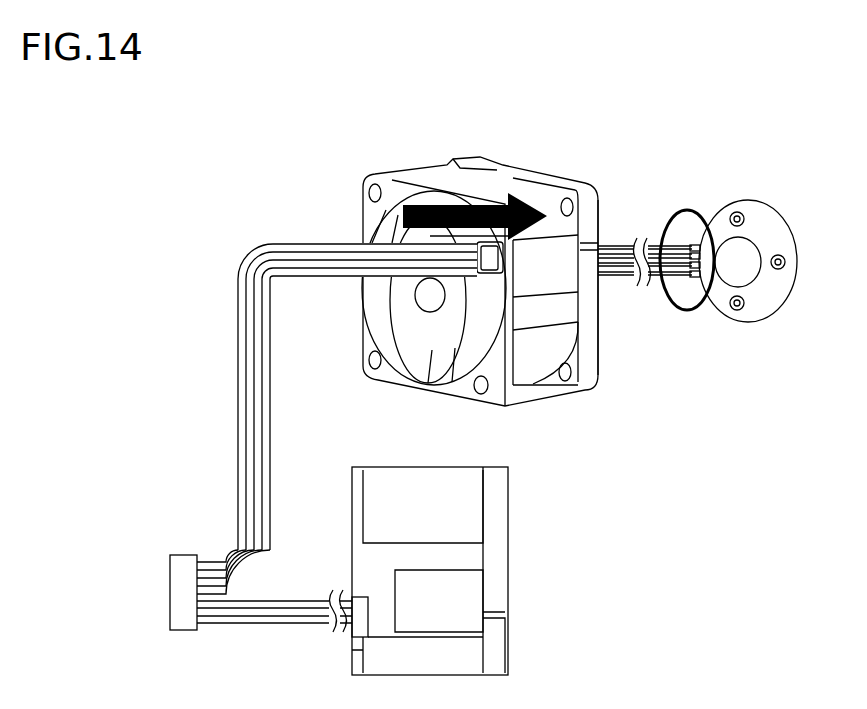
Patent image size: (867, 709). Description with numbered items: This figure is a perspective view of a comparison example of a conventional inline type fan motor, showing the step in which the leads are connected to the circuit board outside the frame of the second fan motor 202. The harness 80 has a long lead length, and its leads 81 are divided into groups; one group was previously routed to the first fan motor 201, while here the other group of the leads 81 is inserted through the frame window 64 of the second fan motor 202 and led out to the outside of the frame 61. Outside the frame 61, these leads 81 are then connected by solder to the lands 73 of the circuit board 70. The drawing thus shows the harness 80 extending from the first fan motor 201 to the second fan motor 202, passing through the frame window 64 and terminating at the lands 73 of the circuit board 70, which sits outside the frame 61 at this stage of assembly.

The frame 61 is at (507, 176).
The second fan motor 202 is at (598, 189).
The frame window 64 is at (468, 276).
The leads 81 is at (307, 248).
The harness 80 is at (210, 560).
The first fan motor 201 is at (509, 545).
The lands 73 is at (690, 283).
The circuit board 70 is at (762, 223).